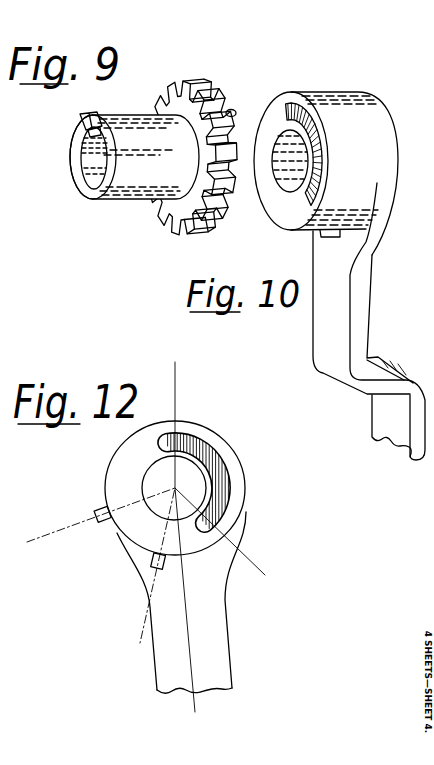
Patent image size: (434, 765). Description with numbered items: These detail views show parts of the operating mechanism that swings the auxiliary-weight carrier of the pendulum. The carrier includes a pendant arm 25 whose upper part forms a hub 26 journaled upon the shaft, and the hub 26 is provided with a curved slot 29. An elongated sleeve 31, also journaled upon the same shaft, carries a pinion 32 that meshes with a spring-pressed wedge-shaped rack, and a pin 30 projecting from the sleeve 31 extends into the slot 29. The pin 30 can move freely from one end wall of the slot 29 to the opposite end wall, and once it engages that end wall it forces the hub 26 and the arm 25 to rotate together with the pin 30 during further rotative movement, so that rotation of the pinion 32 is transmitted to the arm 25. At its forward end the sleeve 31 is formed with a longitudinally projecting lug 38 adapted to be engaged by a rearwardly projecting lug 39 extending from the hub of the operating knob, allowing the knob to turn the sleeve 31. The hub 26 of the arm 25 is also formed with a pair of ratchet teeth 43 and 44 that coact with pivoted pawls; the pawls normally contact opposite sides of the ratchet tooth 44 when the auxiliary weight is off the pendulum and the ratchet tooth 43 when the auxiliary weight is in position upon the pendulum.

In FIG. 10, the pendant arm 25 is at (362, 300).
In FIG. 12, the pendant arm 25 is at (218, 608).
In FIG. 10, the hub 26 is at (336, 92).
In FIG. 12, the hub 26 is at (150, 431).
In FIG. 10, the curved slot 29 is at (291, 112).
In FIG. 12, the curved slot 29 is at (223, 467).
In FIG. 9, the pin 30 is at (228, 109).
In FIG. 9, the elongated sleeve 31 is at (128, 102).
In FIG. 9, the pinion 32 is at (176, 86).
In FIG. 9, the longitudinally projecting lug 38 is at (84, 115).
In FIG. 12, the rearwardly projecting lug 39 is at (6, 434).
In FIG. 12, the ratchet tooth 43 is at (91, 528).
In FIG. 12, the ratchet tooth 44 is at (157, 562).